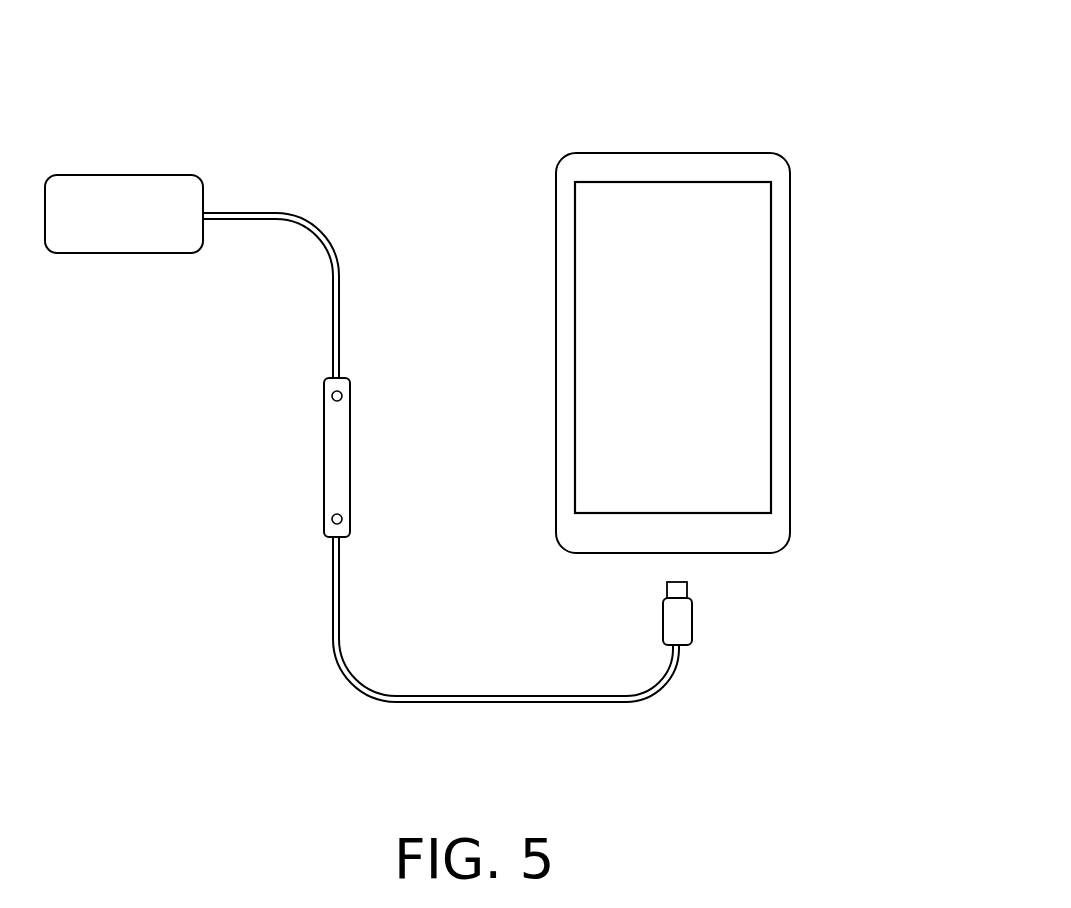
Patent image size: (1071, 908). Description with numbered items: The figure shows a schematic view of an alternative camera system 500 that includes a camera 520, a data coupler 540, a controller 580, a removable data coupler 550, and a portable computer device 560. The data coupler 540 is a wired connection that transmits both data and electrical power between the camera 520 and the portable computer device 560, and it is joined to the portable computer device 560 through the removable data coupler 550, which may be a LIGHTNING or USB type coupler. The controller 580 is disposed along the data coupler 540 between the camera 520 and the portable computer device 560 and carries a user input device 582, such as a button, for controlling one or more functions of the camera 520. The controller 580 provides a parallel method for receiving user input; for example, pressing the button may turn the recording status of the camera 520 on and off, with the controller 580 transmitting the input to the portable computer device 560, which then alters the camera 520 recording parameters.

The camera system 500 is at (810, 90).
The camera 520 is at (160, 192).
The data coupler 540 is at (340, 327).
The removable data coupler 550 is at (680, 590).
The portable computer device 560 is at (777, 173).
The controller 580 is at (365, 375).
The user input device 582 is at (332, 397).